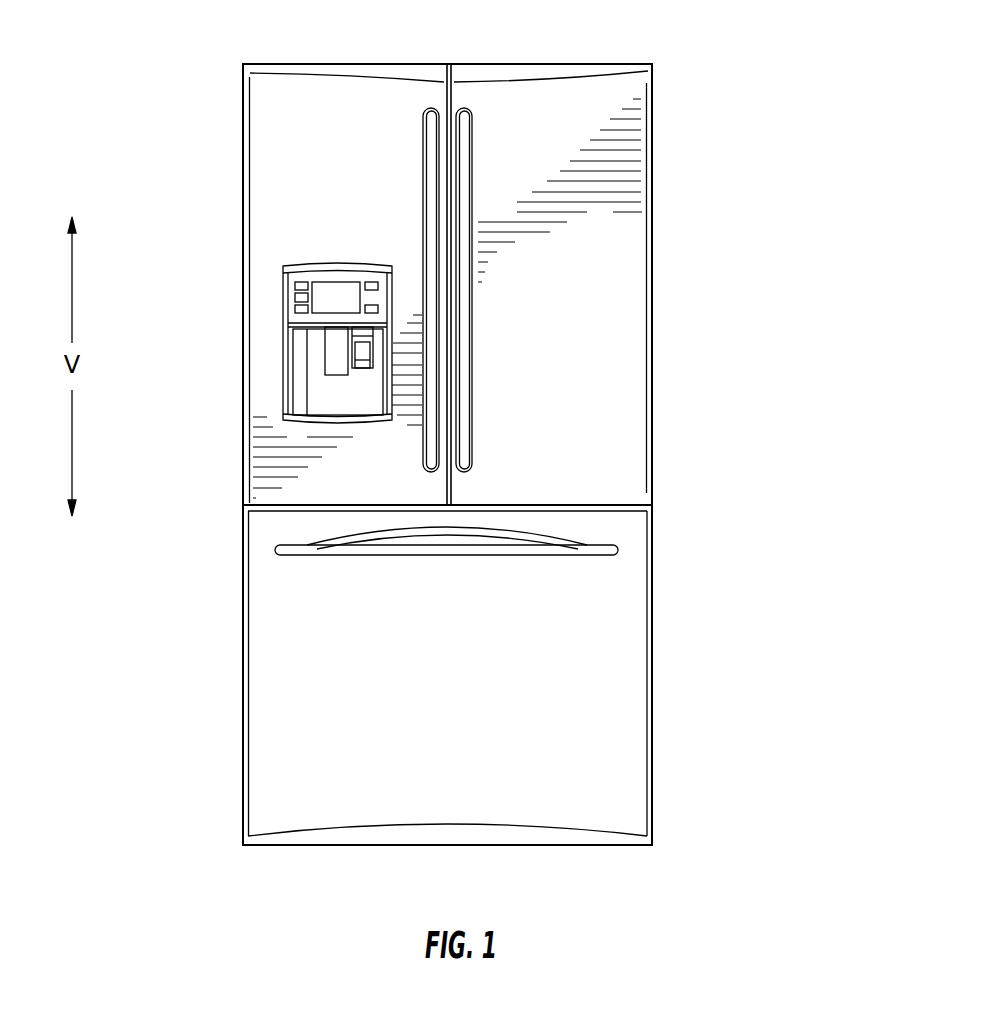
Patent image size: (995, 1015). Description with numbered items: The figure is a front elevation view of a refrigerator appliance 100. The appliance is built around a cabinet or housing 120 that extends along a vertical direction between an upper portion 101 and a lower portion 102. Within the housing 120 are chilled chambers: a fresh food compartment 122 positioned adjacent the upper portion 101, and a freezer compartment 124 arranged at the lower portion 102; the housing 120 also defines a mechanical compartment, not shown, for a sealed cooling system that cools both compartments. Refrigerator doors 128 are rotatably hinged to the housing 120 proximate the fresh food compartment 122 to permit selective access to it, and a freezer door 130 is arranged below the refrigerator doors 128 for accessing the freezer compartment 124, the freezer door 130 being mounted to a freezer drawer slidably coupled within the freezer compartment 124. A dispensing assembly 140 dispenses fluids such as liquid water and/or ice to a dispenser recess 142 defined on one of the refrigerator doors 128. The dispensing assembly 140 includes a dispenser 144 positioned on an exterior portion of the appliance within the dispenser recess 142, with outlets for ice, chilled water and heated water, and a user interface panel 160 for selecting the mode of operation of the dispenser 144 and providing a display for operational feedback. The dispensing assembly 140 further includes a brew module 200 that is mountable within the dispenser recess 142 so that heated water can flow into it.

The refrigerator appliance 100 is at (157, 79).
The upper portion 101 is at (667, 70).
The lower portion 102 is at (668, 828).
The housing 120 is at (650, 507).
The fresh food compartment 122 is at (606, 362).
The freezer compartment 124 is at (606, 644).
The refrigerator doors 128 is at (285, 142).
The freezer door 130 is at (313, 657).
The dispensing assembly 140 is at (256, 337).
The dispenser recess 142 is at (296, 385).
The dispenser 144 is at (290, 257).
The user interface panel 160 is at (358, 268).
The brew module 200 is at (371, 353).